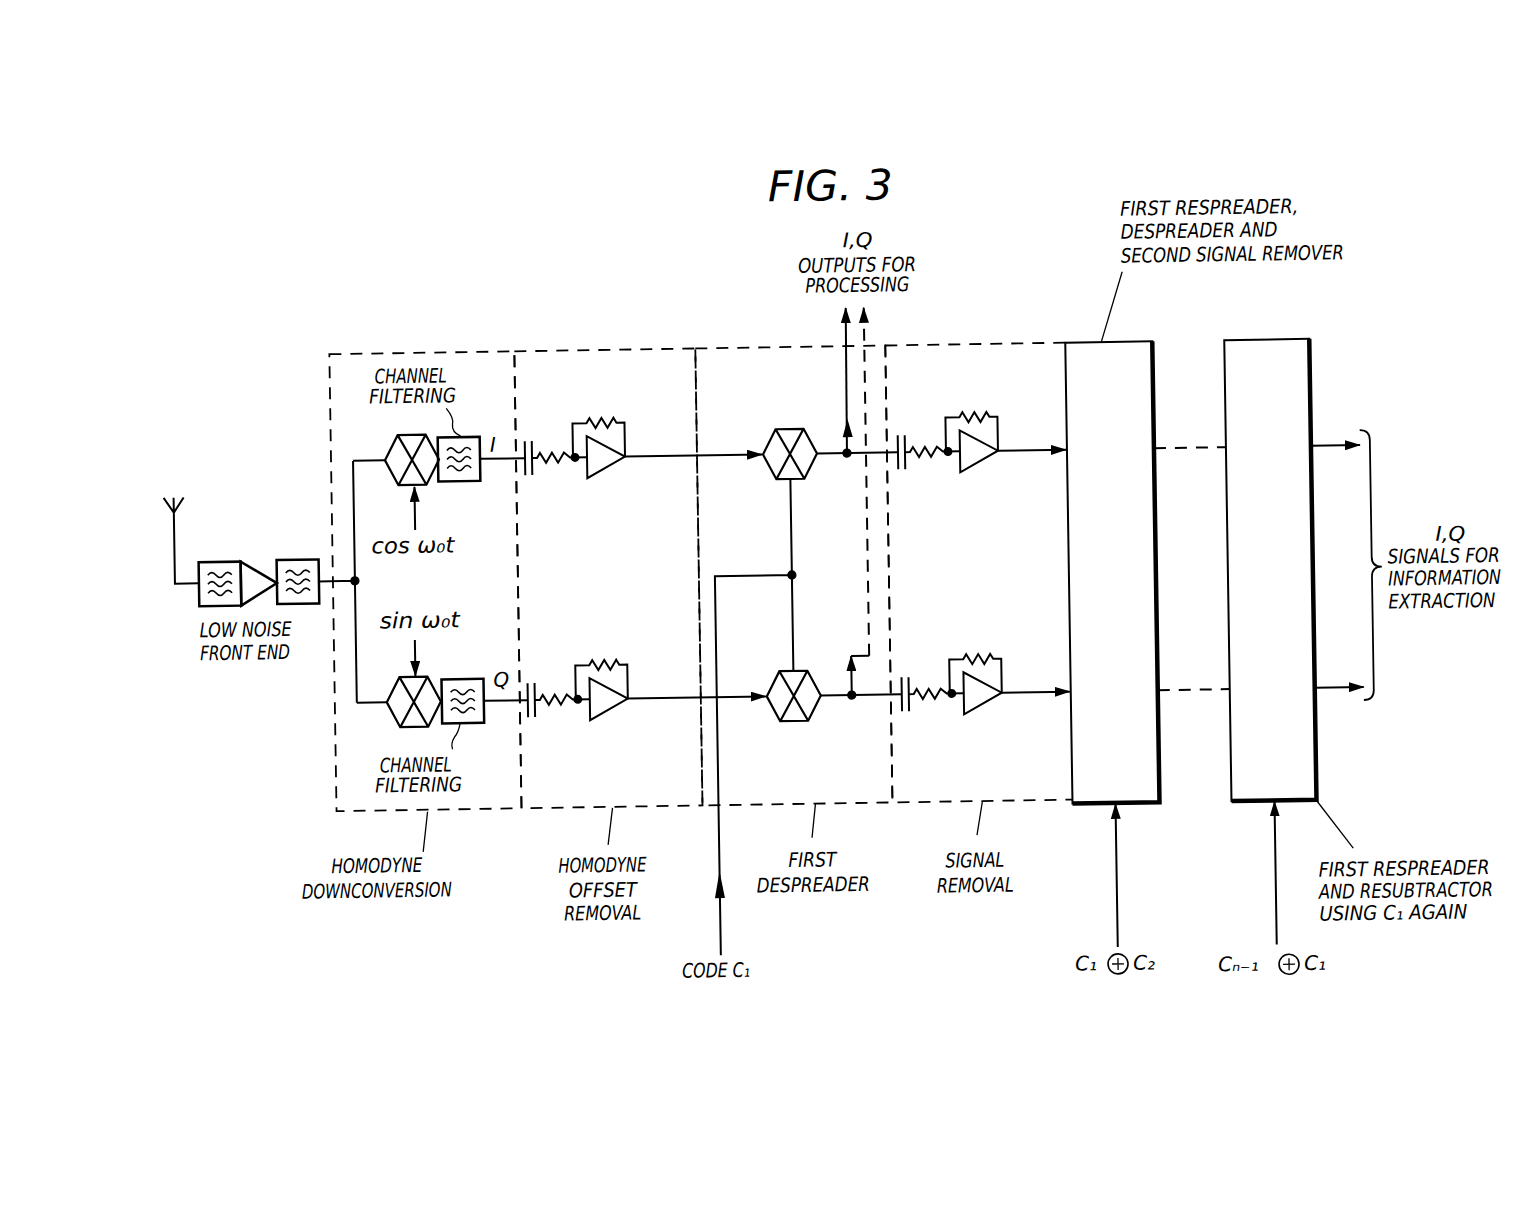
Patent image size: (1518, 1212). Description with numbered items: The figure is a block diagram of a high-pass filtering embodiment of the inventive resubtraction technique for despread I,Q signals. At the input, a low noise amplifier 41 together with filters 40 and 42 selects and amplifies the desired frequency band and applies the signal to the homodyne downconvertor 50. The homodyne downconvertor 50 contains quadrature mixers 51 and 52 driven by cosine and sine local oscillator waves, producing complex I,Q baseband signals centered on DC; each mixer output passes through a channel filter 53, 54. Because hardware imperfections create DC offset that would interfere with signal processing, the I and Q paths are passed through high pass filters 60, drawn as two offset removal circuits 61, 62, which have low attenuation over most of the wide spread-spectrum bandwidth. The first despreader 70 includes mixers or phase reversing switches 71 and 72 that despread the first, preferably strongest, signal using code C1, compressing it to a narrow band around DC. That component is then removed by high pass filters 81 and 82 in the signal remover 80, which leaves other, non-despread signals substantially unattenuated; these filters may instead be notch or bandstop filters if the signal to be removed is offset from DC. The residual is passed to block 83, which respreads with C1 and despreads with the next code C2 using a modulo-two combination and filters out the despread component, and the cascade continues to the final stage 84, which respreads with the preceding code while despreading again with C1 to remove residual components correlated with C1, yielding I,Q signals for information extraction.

The filter 40 is at (218, 553).
The low noise amplifier 41 is at (255, 554).
The filter 42 is at (296, 552).
The homodyne downconvertor 50 is at (396, 347).
The quadrature mixer 51 is at (390, 475).
The quadrature mixer 52 is at (390, 680).
The in-phase channel filter 53 is at (460, 477).
The quadrature channel filter 54 is at (458, 674).
The high pass filters 60 is at (559, 347).
The in-phase offset removal circuit 61 is at (575, 471).
The quadrature offset removal circuit 62 is at (578, 712).
The first despreader 70 is at (731, 347).
The mixer or phase reversing switch 71 is at (789, 429).
The mixer or phase reversing switch 72 is at (792, 722).
The signal remover 80 is at (971, 347).
The high pass filter 81 is at (948, 464).
The high pass filter 82 is at (952, 706).
The block 83 is at (1121, 583).
The final stage 84 is at (1281, 583).